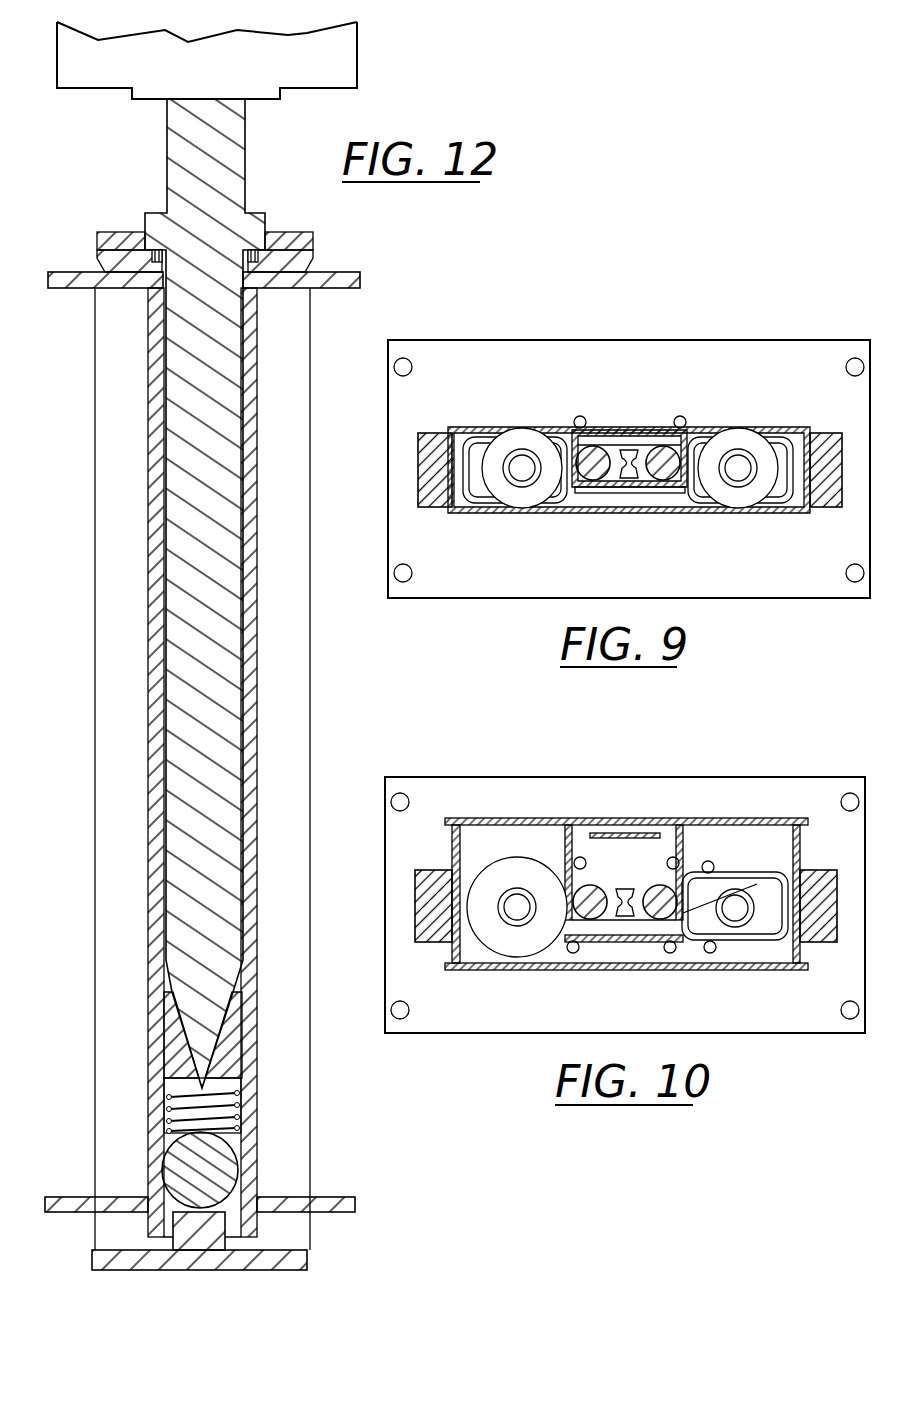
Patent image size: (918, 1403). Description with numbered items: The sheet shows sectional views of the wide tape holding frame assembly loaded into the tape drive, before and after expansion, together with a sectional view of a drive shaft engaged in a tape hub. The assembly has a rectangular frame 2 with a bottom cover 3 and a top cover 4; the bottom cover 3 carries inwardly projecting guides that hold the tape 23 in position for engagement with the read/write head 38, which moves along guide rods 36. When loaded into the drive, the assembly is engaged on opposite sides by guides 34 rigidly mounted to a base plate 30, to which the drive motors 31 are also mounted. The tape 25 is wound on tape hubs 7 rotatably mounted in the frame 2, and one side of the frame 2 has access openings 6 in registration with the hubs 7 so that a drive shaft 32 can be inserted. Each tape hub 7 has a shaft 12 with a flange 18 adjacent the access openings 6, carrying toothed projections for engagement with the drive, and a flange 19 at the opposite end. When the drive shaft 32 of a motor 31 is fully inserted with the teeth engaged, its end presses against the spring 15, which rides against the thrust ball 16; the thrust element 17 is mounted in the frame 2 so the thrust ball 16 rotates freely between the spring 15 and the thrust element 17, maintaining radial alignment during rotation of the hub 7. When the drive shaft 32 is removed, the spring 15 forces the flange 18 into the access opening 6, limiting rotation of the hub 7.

In FIG. 12, the rectangular frame 2 is at (114, 846).
In FIG. 10, the rectangular frame 2 is at (465, 878).
In FIG. 9, the bottom cover 3 is at (472, 427).
In FIG. 10, the bottom cover 3 is at (477, 820).
In FIG. 9, the top cover 4 is at (478, 515).
In FIG. 10, the top cover 4 is at (485, 970).
In FIG. 12, the access openings 6 is at (137, 232).
In FIG. 12, the tape hubs 7 is at (125, 455).
In FIG. 12, the shaft 12 is at (153, 687).
In FIG. 12, the spring 15 is at (160, 1078).
In FIG. 12, the thrust ball 16 is at (180, 1157).
In FIG. 12, the thrust element 17 is at (196, 1243).
In FIG. 12, the flange 18 is at (335, 280).
In FIG. 12, the flange 19 is at (70, 1208).
In FIG. 9, the flange 19 is at (493, 512).
In FIG. 10, the flange 19 is at (767, 925).
In FIG. 9, the tape 23 is at (573, 488).
In FIG. 9, the tape 25 is at (527, 455).
In FIG. 10, the tape 25 is at (513, 873).
In FIG. 9, the base plate 30 is at (432, 348).
In FIG. 10, the base plate 30 is at (763, 785).
In FIG. 12, the drive motors 31 is at (93, 63).
In FIG. 12, the drive shaft 32 is at (208, 148).
In FIG. 9, the guides 34 is at (428, 445).
In FIG. 10, the guides 34 is at (415, 893).
In FIG. 9, the guide rods 36 is at (663, 450).
In FIG. 10, the guide rods 36 is at (657, 888).
In FIG. 9, the read/write head 38 is at (653, 488).
In FIG. 10, the read/write head 38 is at (625, 917).